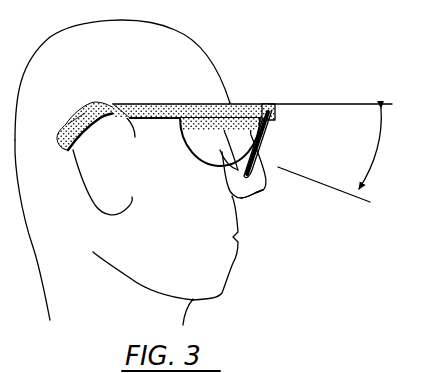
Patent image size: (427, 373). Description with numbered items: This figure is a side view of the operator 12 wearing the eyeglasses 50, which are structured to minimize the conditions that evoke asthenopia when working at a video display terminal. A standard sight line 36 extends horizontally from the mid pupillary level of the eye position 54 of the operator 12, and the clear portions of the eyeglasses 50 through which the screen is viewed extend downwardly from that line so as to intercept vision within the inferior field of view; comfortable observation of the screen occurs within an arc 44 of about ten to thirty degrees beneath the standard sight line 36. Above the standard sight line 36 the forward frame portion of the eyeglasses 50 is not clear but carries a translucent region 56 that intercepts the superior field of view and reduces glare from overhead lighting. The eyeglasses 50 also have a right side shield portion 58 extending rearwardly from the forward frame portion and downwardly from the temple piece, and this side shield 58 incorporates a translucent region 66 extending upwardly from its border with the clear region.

The operator 12 is at (172, 26).
The eyeglasses 50 is at (185, 111).
The translucent region 66 is at (214, 104).
The right side shield portion 58 is at (193, 158).
The translucent region 56 is at (278, 123).
The standard sight line 36 is at (332, 104).
The arc 44 is at (378, 150).
The eye position 54 is at (237, 200).